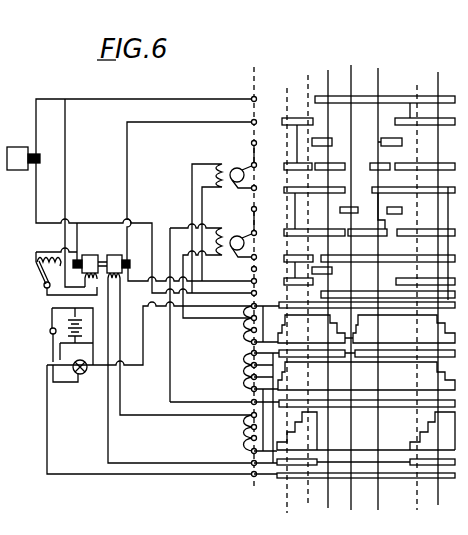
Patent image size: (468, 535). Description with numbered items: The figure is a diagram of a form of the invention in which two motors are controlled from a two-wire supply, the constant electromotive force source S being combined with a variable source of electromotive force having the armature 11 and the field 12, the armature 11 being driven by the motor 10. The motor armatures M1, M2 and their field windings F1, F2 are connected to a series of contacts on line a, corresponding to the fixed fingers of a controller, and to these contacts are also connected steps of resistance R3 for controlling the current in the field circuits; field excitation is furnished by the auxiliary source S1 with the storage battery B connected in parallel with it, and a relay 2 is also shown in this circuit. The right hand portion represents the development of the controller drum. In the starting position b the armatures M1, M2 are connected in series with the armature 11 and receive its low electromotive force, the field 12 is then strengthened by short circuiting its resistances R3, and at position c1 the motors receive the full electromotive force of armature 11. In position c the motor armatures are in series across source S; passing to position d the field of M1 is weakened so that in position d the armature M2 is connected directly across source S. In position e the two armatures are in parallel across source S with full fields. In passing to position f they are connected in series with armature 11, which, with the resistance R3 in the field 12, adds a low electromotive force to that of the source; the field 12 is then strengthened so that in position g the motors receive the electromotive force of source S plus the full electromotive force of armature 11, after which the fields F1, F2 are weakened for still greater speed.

The source of constant electromotive force S is at (23, 158).
The source of electrical energy S1 is at (43, 345).
The storage battery B is at (72, 336).
The relay 2 is at (72, 375).
The motor 10 is at (89, 288).
The armature 11 is at (118, 264).
The field 12 is at (122, 288).
The field winding F1 is at (207, 221).
The motor armature M1 is at (241, 165).
The field winding F2 is at (212, 308).
The motor armature M2 is at (241, 233).
The resistances R3 is at (237, 378).
The line of contacts a is at (252, 271).
The starting position b is at (287, 283).
The position c1 is at (308, 280).
The position c is at (327, 280).
The position d is at (351, 281).
The position e is at (377, 281).
The position f is at (416, 281).
The position g is at (438, 279).